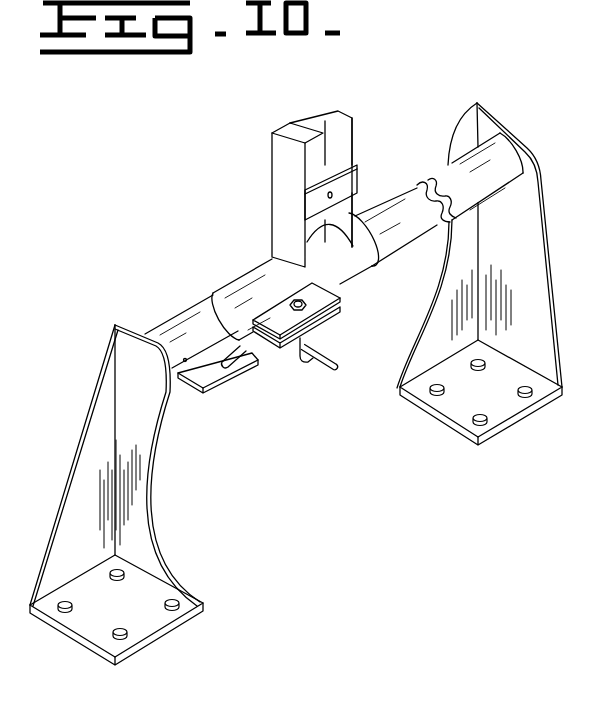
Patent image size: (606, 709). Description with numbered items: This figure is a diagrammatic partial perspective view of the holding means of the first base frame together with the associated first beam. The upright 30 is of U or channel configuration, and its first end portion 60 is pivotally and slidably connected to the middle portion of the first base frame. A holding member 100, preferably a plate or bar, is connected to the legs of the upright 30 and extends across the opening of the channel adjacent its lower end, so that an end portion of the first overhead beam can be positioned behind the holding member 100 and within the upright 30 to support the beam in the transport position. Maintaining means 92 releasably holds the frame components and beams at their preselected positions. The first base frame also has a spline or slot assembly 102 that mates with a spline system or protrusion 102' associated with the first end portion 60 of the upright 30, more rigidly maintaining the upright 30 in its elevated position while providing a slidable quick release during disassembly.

The upright 30 is at (356, 124).
The first end portion of the upright 60 is at (272, 248).
The maintaining means 92 is at (312, 303).
The holding member 100 is at (357, 178).
The spline or slot assembly 102 is at (240, 386).
The spline system or protrusion 102' is at (322, 332).